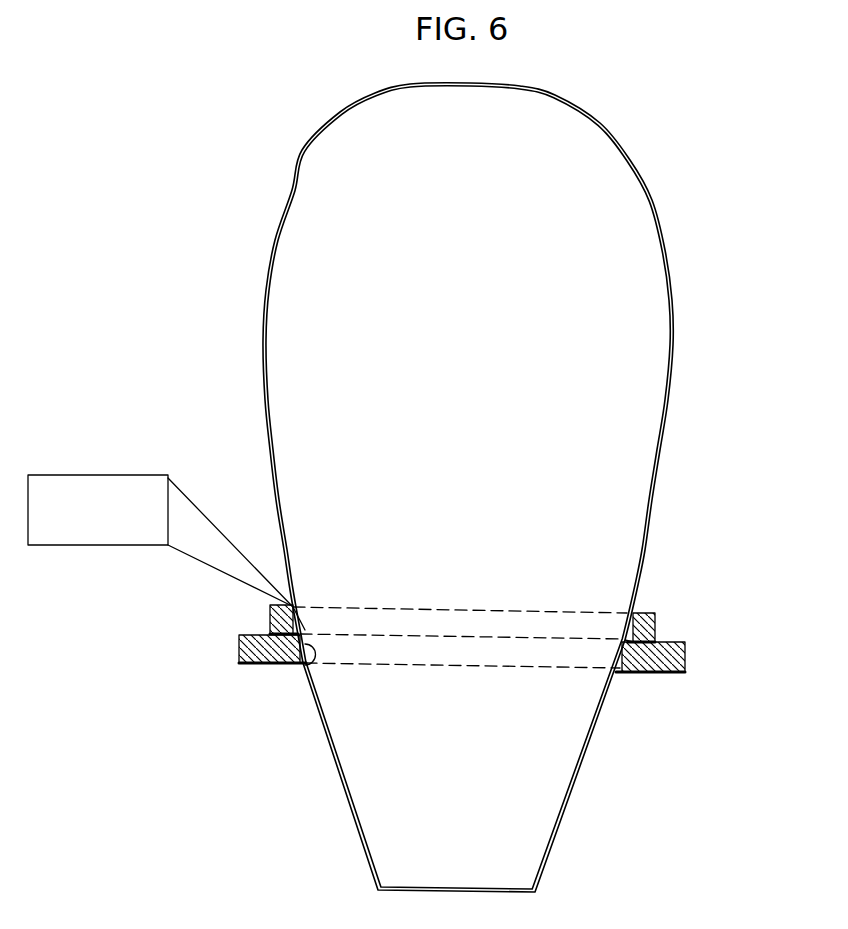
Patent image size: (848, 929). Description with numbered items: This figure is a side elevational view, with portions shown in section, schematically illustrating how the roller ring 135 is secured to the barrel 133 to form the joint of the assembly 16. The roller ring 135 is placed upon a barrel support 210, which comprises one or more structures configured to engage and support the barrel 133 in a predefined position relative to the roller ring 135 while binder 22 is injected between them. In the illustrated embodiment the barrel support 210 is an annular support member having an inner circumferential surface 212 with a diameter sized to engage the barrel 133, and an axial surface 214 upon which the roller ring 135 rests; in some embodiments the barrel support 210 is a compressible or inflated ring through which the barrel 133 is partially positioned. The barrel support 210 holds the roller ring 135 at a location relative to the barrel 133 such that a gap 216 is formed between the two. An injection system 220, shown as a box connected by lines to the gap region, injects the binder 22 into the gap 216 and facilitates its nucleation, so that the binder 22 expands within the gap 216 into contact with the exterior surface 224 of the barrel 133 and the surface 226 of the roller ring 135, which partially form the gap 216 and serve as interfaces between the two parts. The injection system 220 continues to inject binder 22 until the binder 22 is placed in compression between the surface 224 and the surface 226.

The inflatable restraint system 16 is at (228, 0).
The binder 22 is at (298, 636).
The barrel 133 is at (672, 347).
The roller ring 135 is at (657, 620).
The barrel support 210 is at (686, 655).
The inner circumferential surface 212 is at (318, 672).
The axial surface 214 is at (250, 634).
The gap 216 is at (632, 640).
The injection system 220 is at (72, 475).
The exterior surface of barrel 224 is at (305, 630).
The surface of roller ring 226 is at (293, 604).